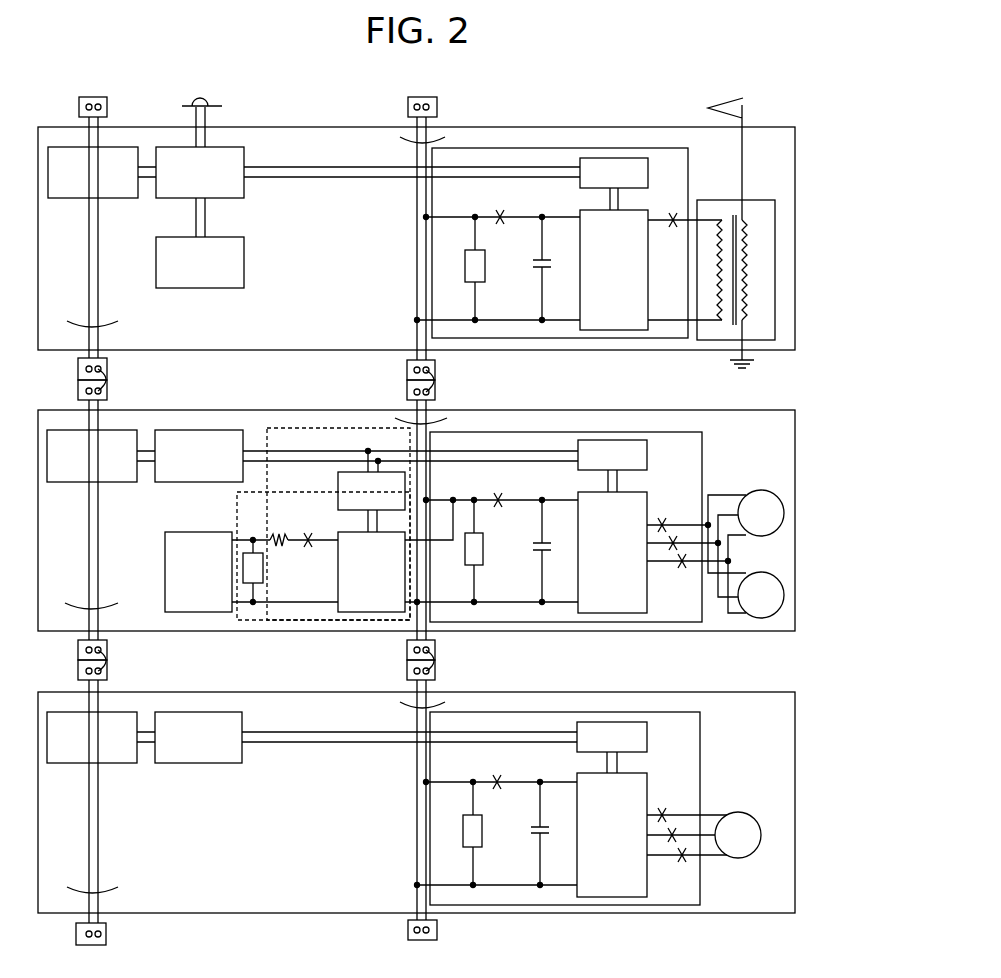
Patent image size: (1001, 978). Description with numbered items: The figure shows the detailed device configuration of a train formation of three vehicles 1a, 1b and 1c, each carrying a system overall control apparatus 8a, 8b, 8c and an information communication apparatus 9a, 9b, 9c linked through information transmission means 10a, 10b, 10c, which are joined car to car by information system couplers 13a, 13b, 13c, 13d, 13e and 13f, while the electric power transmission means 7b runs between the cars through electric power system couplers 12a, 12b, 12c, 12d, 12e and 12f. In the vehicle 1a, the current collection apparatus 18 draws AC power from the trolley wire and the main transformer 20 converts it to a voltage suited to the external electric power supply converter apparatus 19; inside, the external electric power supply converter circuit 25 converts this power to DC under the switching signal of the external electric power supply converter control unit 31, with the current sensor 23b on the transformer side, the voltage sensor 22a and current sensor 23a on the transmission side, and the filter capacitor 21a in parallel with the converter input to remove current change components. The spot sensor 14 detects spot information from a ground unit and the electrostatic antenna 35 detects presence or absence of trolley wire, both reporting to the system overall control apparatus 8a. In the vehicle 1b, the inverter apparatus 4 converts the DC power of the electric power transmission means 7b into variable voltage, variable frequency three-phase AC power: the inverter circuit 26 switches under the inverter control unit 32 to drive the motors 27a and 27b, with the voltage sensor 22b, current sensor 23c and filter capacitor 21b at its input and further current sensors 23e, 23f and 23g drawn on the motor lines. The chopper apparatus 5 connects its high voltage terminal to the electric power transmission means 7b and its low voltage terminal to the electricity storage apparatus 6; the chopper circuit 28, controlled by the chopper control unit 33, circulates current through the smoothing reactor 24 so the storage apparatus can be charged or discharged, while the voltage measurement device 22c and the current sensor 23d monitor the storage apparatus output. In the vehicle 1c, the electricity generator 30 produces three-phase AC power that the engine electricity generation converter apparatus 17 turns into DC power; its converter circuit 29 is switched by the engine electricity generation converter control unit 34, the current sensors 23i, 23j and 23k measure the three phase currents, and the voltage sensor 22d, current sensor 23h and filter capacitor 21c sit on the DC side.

The vehicle 1a is at (602, 128).
The vehicle 1b is at (598, 411).
The vehicle 1c is at (595, 693).
The inverter apparatus 4 is at (695, 447).
The chopper apparatus 5 is at (238, 493).
The electricity storage apparatus 6 is at (180, 532).
The electric power transmission means 7b is at (434, 518).
The system overall control apparatus 8a is at (240, 196).
The system overall control apparatus 8b is at (172, 482).
The system overall control apparatus 8c is at (236, 762).
The information communication apparatus 9a is at (112, 198).
The information communication apparatus 9b is at (110, 482).
The information communication apparatus 9c is at (110, 763).
The information transmission means 10a is at (113, 237).
The information transmission means 10b is at (110, 520).
The information transmission means 10c is at (113, 801).
The electric power system coupler 12a is at (402, 107).
The electric power system coupler 12b is at (401, 373).
The electric power system coupler 12c is at (401, 392).
The electric power system coupler 12d is at (401, 653).
The electric power system coupler 12e is at (401, 671).
The power line coupler 12f is at (402, 938).
The information system coupler 13a is at (72, 107).
The information system coupler 13b is at (72, 371).
The information system coupler 13c is at (72, 391).
The information system coupler 13d is at (72, 653).
The information system coupler 13e is at (72, 671).
The information line coupler 13f is at (71, 939).
The spot sensor 14 is at (238, 286).
The engine electricity generation converter apparatus 17 is at (693, 730).
The current collection apparatus 18 is at (742, 116).
The external electric power supply converter apparatus 19 is at (680, 155).
The main transformer 20 is at (768, 205).
The filter capacitor 21a is at (538, 270).
The filter capacitor 21b is at (538, 553).
The filter capacitor 21c is at (536, 836).
The voltage sensor 22a is at (465, 280).
The voltage sensor 22b is at (465, 563).
The voltage measurement device 22c is at (263, 575).
The voltage sensor 22d is at (463, 845).
The current sensor 23a is at (500, 225).
The current sensor 23b is at (673, 228).
The current sensor 23c is at (498, 508).
The current detector 23d is at (308, 548).
The current detector 23e is at (677, 516).
The current detector 23f is at (673, 550).
The current detector 23g is at (687, 575).
The current sensor 23h is at (497, 790).
The current sensor 23i is at (687, 805).
The current sensor 23j is at (672, 842).
The current sensor 23k is at (687, 869).
The smoothing reactor 24 is at (280, 532).
The external electric power supply converter circuit 25 is at (580, 287).
The inverter circuit 26 is at (578, 567).
The motor 27a is at (785, 476).
The motor 27b is at (785, 558).
The chopper circuit 28 is at (338, 568).
The engine electricity generation converter circuit 29 is at (577, 852).
The electricity generator 30 is at (747, 813).
The external electric power supply converter control unit 31 is at (648, 170).
The inverter control unit 32 is at (647, 458).
The chopper control unit 33 is at (338, 490).
The engine electricity generation converter control unit 34 is at (647, 738).
The electrostatic antenna 35 is at (214, 122).